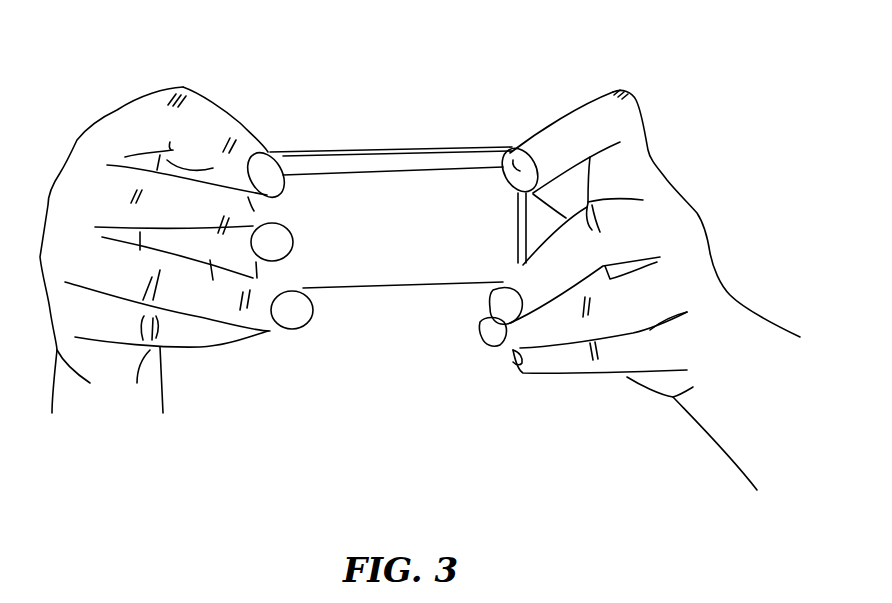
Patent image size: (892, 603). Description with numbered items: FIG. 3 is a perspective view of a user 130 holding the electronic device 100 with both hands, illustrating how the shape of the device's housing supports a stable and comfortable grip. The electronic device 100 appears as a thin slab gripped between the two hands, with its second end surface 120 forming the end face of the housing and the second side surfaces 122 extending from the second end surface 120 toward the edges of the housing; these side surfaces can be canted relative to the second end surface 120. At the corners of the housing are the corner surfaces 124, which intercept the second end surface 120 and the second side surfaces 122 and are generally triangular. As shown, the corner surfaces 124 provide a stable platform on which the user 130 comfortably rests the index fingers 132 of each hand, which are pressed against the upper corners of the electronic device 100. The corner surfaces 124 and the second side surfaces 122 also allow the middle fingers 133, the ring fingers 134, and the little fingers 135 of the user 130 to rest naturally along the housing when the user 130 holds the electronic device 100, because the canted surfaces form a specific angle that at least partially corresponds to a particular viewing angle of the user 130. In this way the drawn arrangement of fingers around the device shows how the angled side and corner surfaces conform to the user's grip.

The electronic device 100 is at (399, 186).
The second end surface 120 is at (383, 265).
The second side surfaces 122 is at (432, 157).
The corner surfaces 124 is at (293, 150).
The user 130 is at (752, 255).
The index fingers 132 is at (256, 140).
The middle fingers 133 is at (293, 247).
The ring fingers 134 is at (293, 330).
The little fingers 135 is at (220, 347).